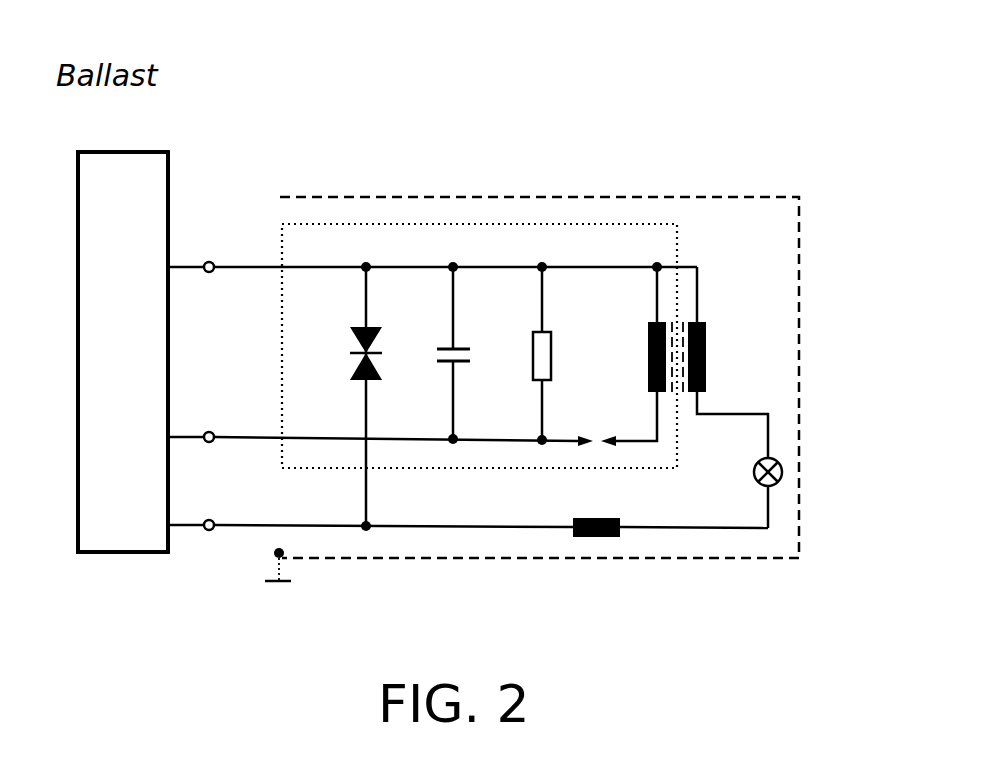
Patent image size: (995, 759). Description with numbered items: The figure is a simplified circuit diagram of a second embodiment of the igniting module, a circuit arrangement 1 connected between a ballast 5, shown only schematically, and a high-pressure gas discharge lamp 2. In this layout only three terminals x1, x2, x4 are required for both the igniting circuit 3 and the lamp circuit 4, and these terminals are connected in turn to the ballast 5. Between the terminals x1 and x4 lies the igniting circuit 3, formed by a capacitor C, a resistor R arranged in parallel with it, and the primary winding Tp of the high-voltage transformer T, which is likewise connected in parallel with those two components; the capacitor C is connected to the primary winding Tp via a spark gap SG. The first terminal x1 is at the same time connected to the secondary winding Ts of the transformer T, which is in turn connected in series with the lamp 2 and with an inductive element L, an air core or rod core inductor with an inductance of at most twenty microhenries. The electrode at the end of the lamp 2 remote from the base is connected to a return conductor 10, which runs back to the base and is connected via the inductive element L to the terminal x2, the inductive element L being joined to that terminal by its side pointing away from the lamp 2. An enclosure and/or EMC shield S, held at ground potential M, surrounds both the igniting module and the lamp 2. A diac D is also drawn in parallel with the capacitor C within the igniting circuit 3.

The circuit arrangement 1 is at (815, 239).
The high-pressure gas discharge lamp 2 is at (753, 472).
The igniting circuit 3 is at (425, 470).
The lamp circuit 4 is at (233, 534).
The ballast 5 is at (122, 162).
The return conductor 10 is at (686, 532).
The diac D is at (382, 350).
The capacitor C is at (464, 346).
The resistor R is at (551, 356).
The spark gap SG is at (617, 419).
The high-voltage transformer T is at (674, 362).
The primary winding Tp is at (648, 333).
The secondary winding Ts is at (712, 333).
The inductive element L is at (597, 538).
The ground potential M is at (284, 584).
The enclosure and/or EMC shield S is at (800, 455).
The first terminal x1 is at (209, 273).
The terminal x4 is at (209, 431).
The terminal x2 is at (209, 519).